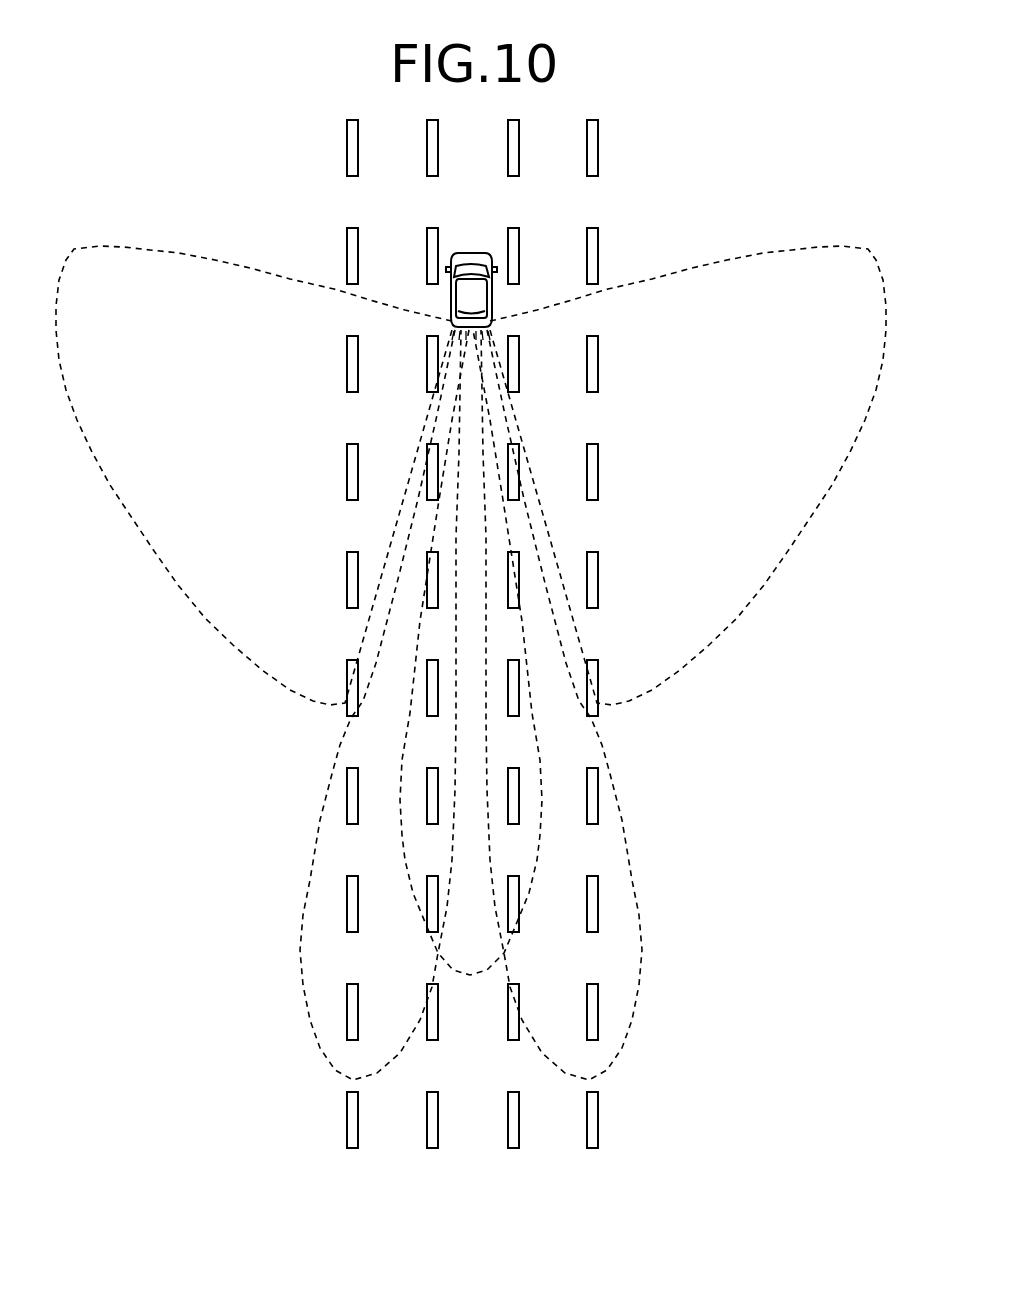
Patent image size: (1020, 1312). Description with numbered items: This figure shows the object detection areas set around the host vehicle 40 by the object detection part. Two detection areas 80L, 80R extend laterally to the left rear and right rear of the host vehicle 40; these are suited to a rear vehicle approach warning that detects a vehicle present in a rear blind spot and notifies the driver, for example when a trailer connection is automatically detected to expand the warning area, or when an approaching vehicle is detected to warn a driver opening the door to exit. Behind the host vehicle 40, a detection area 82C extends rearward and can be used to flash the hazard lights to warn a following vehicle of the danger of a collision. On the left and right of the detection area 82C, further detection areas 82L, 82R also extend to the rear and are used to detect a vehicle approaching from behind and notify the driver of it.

The host vehicle 40 is at (472, 252).
The detection area 80L is at (196, 250).
The detection area 80R is at (746, 250).
The detection area 82L is at (302, 952).
The detection area 82C is at (464, 978).
The detection area 82R is at (642, 952).